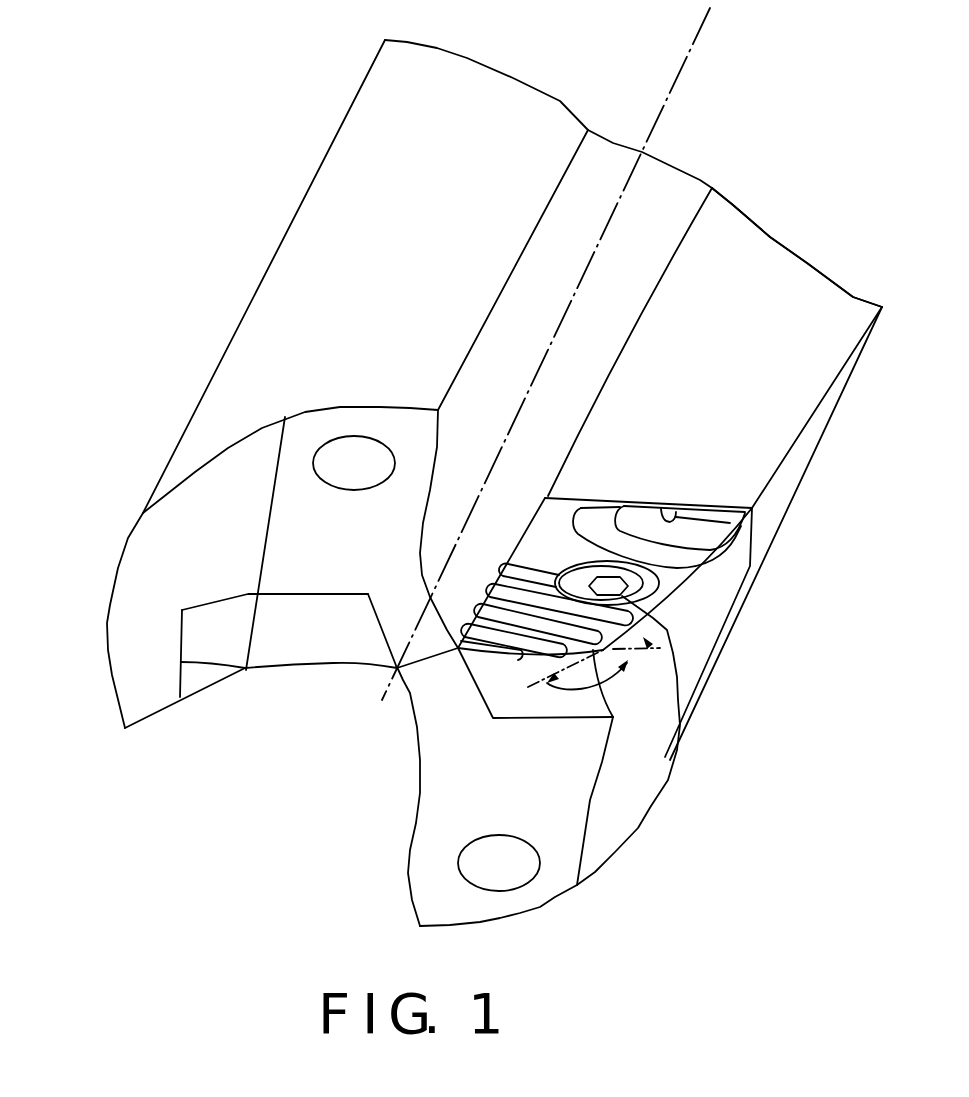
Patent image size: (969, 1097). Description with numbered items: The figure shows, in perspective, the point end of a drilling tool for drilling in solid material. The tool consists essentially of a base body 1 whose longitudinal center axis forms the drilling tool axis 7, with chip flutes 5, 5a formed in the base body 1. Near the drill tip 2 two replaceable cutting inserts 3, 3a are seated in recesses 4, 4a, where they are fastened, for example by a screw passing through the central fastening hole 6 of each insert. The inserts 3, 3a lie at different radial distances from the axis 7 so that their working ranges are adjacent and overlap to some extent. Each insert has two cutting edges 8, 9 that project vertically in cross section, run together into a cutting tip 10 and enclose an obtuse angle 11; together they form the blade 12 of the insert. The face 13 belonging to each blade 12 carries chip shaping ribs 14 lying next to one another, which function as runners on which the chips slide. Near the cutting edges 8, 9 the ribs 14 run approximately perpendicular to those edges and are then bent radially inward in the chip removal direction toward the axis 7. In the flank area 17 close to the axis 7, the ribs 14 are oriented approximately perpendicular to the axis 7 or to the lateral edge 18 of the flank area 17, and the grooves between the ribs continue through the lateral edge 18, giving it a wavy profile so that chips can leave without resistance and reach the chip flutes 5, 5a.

The base body 1 is at (338, 217).
The drill tip 2 is at (412, 688).
The insert 3 is at (730, 583).
The insert 3a is at (193, 625).
The recess 4 is at (594, 718).
The recess 4a is at (285, 596).
The chip flute 5 is at (755, 282).
The chip flute 5a is at (238, 688).
The central fastening hole 6 is at (708, 556).
The drilling tool axis 7 is at (663, 107).
The cutting edge 8 is at (330, 664).
The cutting edge 9 is at (200, 696).
The cutting tip 10 is at (181, 662).
The obtuse angle 11 is at (630, 688).
The blade 12 is at (294, 676).
The face 13 is at (557, 514).
The chip shaping ribs 14 is at (590, 523).
The flank area 17 is at (528, 525).
The lateral edge 18 is at (512, 553).